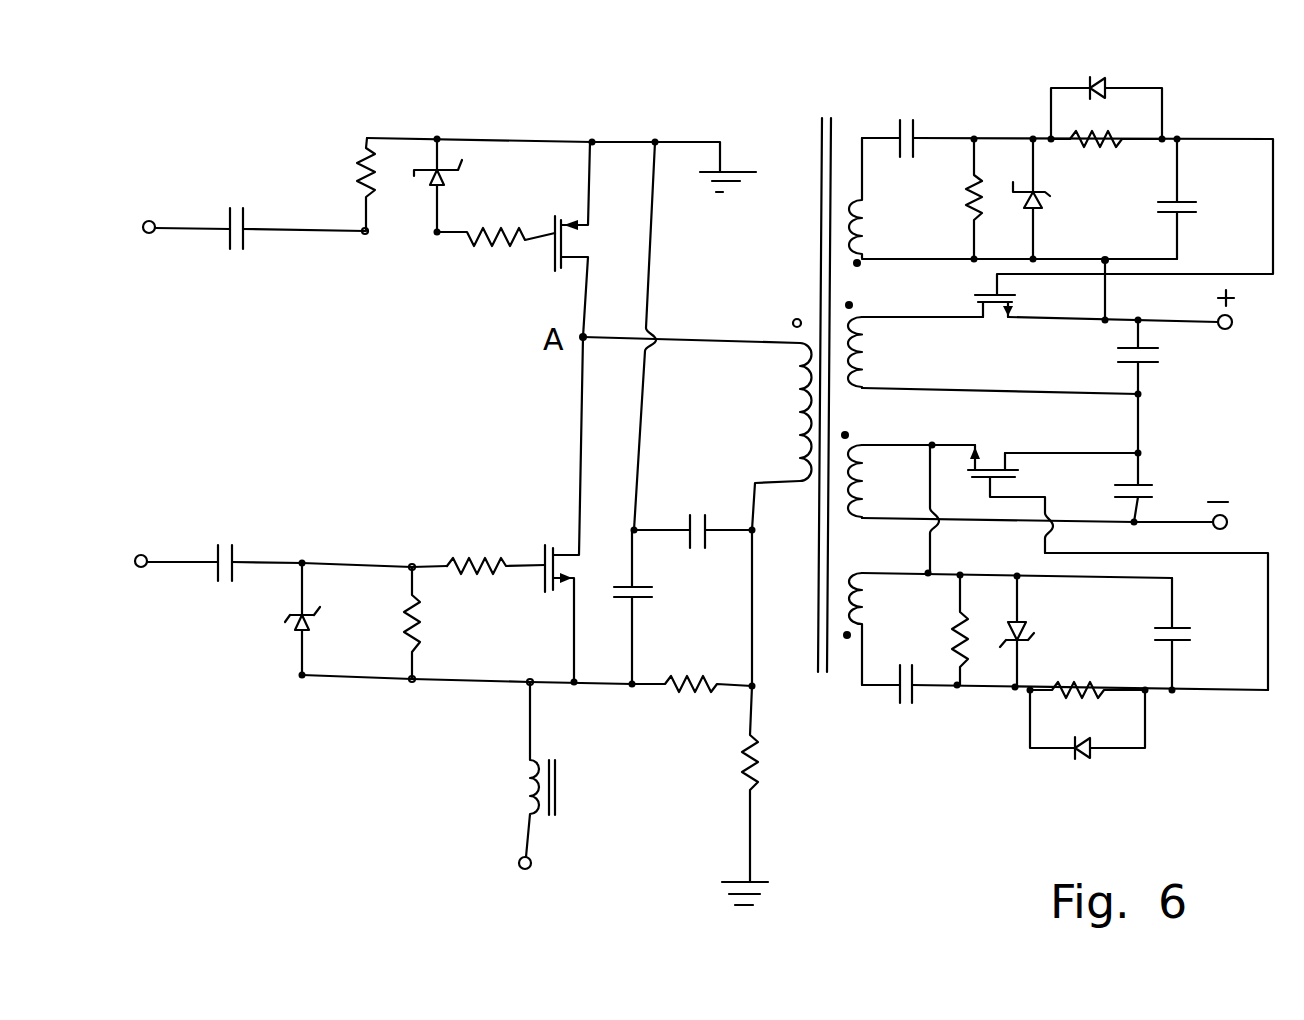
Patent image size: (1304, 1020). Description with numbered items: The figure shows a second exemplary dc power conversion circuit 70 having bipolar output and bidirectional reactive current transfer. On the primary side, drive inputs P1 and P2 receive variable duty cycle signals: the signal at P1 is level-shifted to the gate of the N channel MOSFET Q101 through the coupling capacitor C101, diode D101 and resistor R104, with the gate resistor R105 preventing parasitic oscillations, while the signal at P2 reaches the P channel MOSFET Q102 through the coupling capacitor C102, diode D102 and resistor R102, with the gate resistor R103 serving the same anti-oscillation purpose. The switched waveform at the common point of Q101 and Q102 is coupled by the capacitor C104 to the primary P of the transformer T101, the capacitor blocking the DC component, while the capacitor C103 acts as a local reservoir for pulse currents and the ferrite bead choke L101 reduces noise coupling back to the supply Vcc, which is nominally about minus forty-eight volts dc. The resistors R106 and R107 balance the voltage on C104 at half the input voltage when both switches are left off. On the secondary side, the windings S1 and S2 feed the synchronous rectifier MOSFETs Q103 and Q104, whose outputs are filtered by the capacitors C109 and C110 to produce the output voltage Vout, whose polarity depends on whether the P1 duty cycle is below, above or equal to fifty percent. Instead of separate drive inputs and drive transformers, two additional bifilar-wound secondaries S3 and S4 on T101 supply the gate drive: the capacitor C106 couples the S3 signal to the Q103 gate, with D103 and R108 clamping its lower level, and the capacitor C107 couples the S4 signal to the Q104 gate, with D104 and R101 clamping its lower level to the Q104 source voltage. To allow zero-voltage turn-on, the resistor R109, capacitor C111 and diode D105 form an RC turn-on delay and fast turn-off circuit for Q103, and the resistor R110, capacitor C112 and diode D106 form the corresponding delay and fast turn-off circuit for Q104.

The power conversion circuit 70 is at (204, 850).
The drive input P1 is at (152, 539).
The drive input P2 is at (186, 157).
The coupling capacitor C101 is at (228, 551).
The coupling capacitor C102 is at (250, 246).
The coupling diode D101 is at (267, 619).
The coupling diode D102 is at (464, 185).
The coupling resistor R102 is at (337, 184).
The gate resistor R103 is at (496, 253).
The coupling resistor R104 is at (381, 623).
The gate resistor R105 is at (489, 555).
The N channel MOSFET Q101 is at (544, 509).
The P channel MOSFET Q102 is at (559, 239).
The reservoir capacitor C103 is at (659, 607).
The coupling capacitor C104 is at (693, 524).
The balancing resistor R106 is at (692, 702).
The balancing resistor R107 is at (782, 706).
The inductor L101 is at (497, 769).
The input power voltage Vcc is at (542, 883).
The transformer T101 is at (779, 395).
The primary P is at (782, 436).
The secondary S1 is at (879, 344).
The secondary S2 is at (873, 474).
The secondary S3 is at (875, 202).
The secondary S4 is at (866, 629).
The coupling capacitor C106 is at (916, 120).
The clamp resistor R108 is at (947, 199).
The clamp diode D103 is at (1068, 199).
The delay resistor R109 is at (1106, 161).
The fast turn-off diode D105 is at (1106, 92).
The delay capacitor C111 is at (1215, 199).
The N channel MOSFET Q103 is at (955, 299).
The output capacitor C109 is at (1173, 357).
The output voltage Vout is at (1260, 416).
The N channel MOSFET Q104 is at (1006, 485).
The output capacitor C110 is at (1161, 458).
The coupling capacitor C107 is at (911, 707).
The clamp resistor R101 is at (931, 630).
The clamp diode D104 is at (1049, 631).
The delay capacitor C112 is at (1211, 634).
The delay resistor R110 is at (1087, 673).
The fast turn-off diode D106 is at (1087, 743).